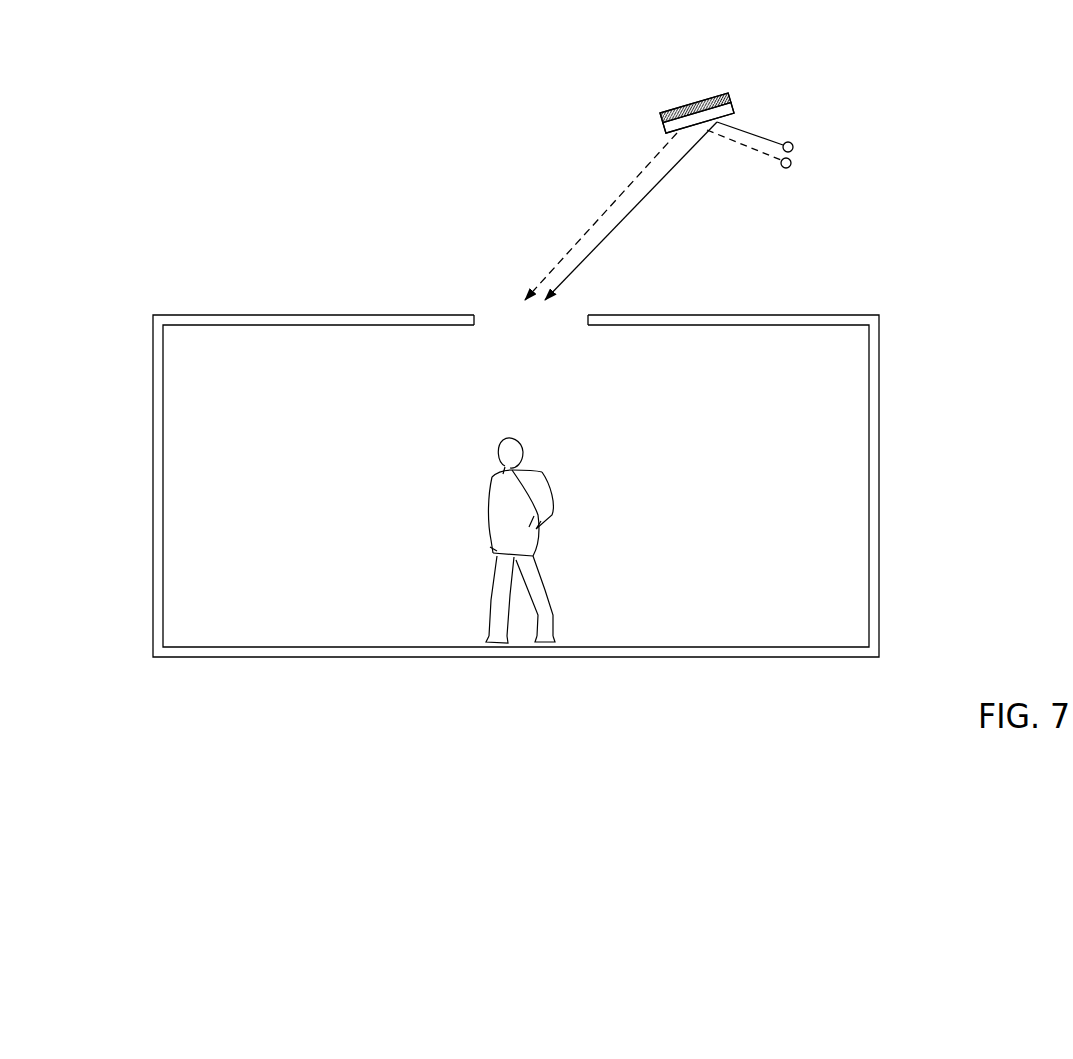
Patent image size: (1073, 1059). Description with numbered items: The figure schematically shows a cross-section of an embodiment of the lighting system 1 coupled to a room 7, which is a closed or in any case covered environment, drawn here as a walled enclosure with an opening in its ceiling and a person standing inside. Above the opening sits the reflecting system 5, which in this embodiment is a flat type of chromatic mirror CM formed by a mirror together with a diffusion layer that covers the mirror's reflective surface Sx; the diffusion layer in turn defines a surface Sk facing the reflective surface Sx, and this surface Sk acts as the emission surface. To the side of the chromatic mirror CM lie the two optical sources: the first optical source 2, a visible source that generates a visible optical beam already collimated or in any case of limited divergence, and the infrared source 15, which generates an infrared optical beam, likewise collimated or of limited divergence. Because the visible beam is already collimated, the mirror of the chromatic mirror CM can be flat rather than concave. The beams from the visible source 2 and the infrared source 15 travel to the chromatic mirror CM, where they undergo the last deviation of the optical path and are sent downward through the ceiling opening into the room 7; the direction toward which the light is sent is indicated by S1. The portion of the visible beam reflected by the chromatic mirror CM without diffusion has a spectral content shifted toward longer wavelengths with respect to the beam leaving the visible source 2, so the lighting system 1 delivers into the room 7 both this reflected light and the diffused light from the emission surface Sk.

The lighting system 1 is at (896, 131).
The first optical source 2 is at (788, 142).
The reflecting system 5 is at (717, 116).
The room 7 is at (250, 374).
The infrared source 15 is at (786, 168).
The chromatic mirror CM is at (730, 92).
The reflective surface Sx is at (670, 121).
The concave surface Sk is at (666, 140).
The first surface S1 is at (582, 296).